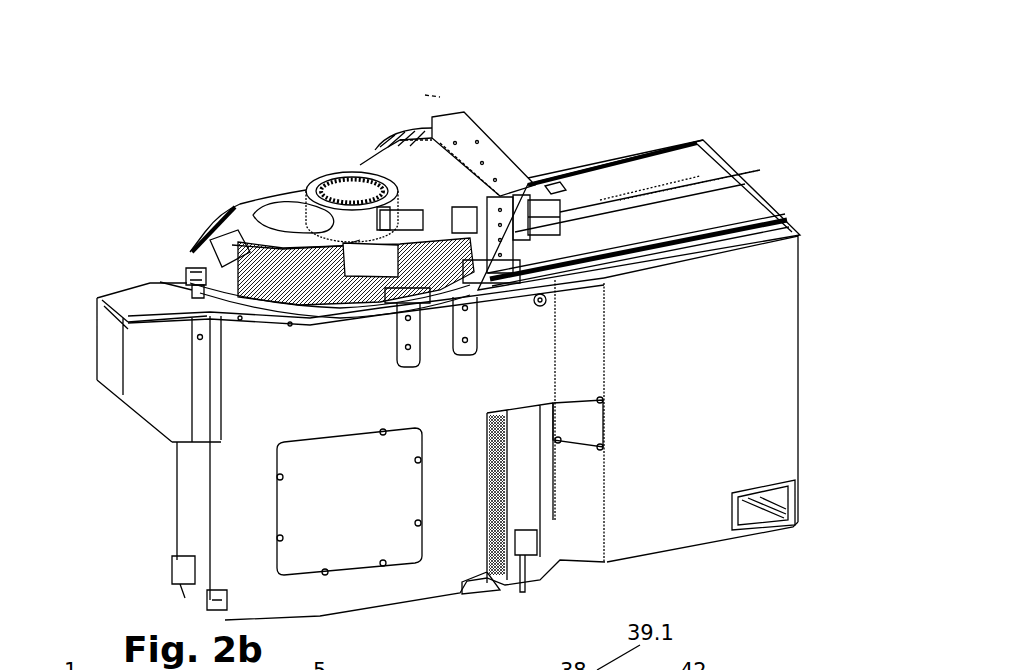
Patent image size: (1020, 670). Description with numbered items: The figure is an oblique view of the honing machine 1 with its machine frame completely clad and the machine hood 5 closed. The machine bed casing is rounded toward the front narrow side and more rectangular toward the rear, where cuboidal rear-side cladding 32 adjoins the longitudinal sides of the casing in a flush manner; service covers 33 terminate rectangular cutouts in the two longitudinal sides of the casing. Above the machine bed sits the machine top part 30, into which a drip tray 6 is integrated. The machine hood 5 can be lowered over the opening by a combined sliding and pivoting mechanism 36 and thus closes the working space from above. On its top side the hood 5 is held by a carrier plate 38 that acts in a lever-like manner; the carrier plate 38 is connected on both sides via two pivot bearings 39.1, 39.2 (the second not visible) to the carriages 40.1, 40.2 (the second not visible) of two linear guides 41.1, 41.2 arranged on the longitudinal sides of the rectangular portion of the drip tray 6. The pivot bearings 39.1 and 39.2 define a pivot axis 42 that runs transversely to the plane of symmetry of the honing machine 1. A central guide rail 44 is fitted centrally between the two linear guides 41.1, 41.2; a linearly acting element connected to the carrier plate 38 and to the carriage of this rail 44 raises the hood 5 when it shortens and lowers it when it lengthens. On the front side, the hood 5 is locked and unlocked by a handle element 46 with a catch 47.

The honing machine 1 is at (160, 207).
The machine hood 5 is at (265, 200).
The drip tray 6 is at (658, 178).
The machine top part 30 is at (735, 137).
The rear-side cladding 32 is at (678, 512).
The service cover 33 is at (380, 508).
The combined sliding and pivoting mechanism 36 is at (575, 178).
The carrier plate 38 is at (455, 153).
The pivot bearing 39.1 is at (523, 205).
The pivot bearing 39.2 is at (415, 86).
The carriage 40.1 is at (513, 260).
The carriage 40.2 is at (413, 111).
The linear guide 41.1 is at (667, 250).
The linear guide 41.2 is at (612, 165).
The pivot axis 42 is at (432, 97).
The central guide rail 44 is at (675, 193).
The handle element 46 is at (187, 277).
The catch 47 is at (187, 286).